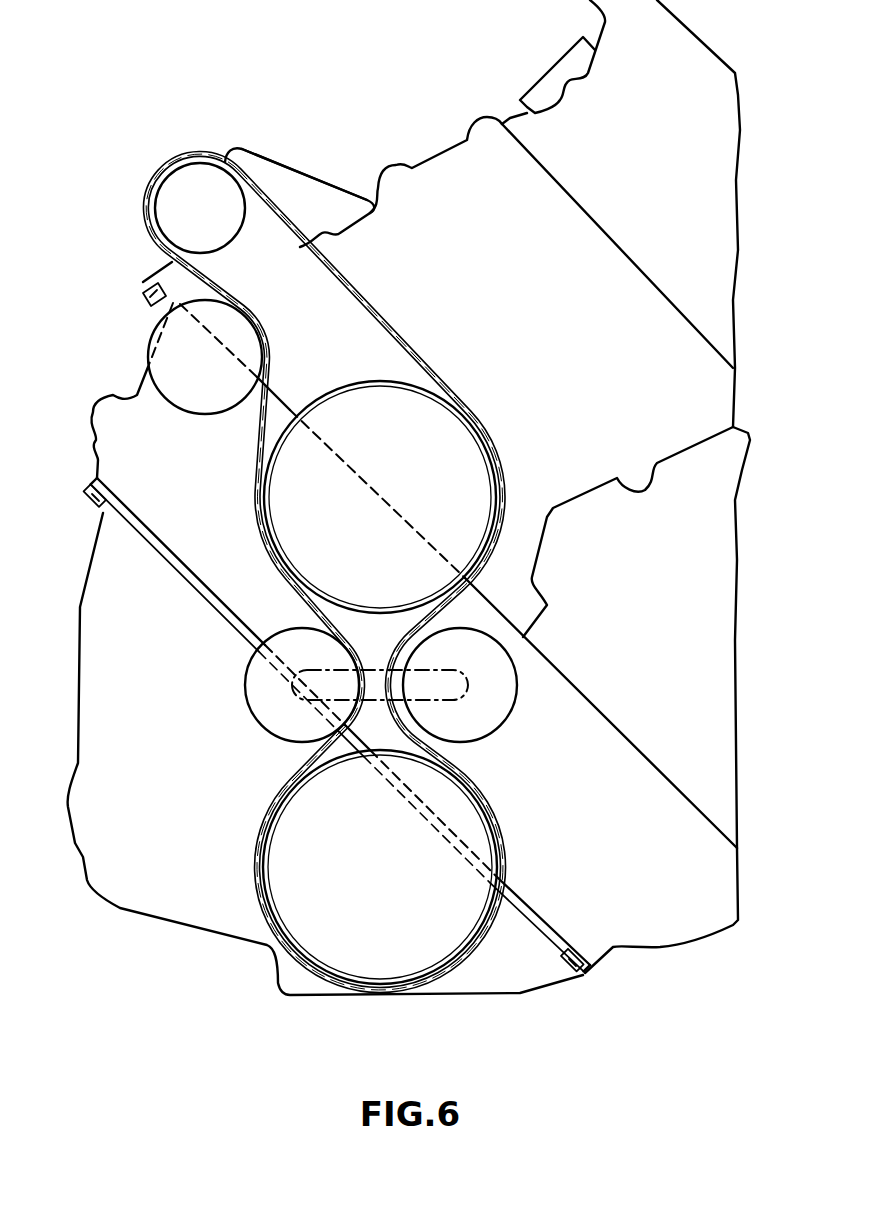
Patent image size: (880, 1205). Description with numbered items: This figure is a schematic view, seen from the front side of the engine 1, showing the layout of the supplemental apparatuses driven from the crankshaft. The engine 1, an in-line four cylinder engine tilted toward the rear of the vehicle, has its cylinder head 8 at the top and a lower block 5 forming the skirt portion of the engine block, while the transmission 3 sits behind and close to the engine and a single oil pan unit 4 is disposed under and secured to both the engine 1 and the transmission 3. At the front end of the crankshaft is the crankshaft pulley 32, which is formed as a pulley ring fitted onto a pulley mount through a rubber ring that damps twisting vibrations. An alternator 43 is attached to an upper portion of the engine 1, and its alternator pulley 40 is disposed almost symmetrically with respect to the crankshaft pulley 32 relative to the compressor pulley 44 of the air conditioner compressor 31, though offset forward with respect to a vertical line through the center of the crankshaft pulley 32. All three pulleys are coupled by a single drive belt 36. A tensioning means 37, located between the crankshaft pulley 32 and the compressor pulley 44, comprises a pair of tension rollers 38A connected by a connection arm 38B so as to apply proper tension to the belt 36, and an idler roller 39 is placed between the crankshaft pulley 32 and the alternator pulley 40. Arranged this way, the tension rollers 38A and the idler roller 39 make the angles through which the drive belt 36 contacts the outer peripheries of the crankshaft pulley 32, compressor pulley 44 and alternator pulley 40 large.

The engine 1 is at (447, 100).
The transmission 3 is at (716, 543).
The oil pan unit 4 is at (168, 908).
The lower block 5 is at (132, 397).
The cylinder head 8 is at (712, 223).
The air conditioner compressor 31 is at (415, 899).
The crankshaft pulley 32 is at (265, 520).
The drive belt 36 is at (300, 273).
The tensioning means 37 is at (401, 704).
The tension rollers 38A is at (258, 683).
The connection arm 38B is at (457, 688).
The idler roller 39 is at (157, 330).
The alternator pulley 40 is at (203, 173).
The alternator 43 is at (150, 167).
The compressor pulley 44 is at (413, 950).